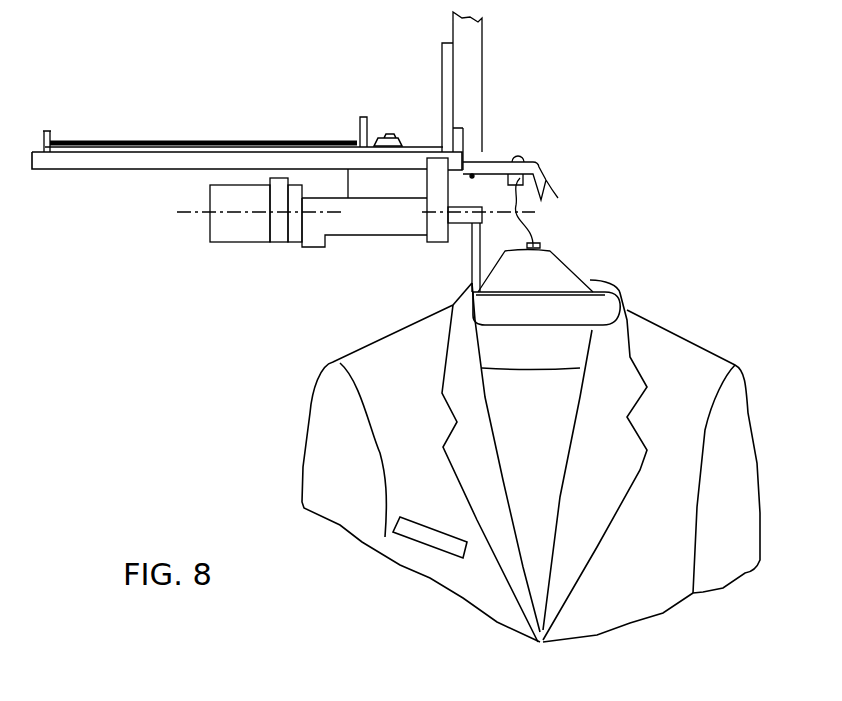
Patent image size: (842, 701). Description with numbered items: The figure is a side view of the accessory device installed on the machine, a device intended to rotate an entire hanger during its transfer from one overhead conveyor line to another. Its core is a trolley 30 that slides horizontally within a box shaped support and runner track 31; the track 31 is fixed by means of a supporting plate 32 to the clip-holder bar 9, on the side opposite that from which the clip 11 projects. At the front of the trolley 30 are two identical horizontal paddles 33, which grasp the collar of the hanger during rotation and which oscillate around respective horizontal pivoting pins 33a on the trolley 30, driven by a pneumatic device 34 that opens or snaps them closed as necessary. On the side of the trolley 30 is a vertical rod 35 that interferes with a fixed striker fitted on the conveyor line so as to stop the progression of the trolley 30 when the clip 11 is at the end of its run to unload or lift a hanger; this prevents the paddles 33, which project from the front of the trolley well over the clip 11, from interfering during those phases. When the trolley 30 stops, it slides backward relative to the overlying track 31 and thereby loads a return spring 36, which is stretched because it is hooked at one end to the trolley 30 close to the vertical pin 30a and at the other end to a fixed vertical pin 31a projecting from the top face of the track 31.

The clip-holder bar 9 is at (470, 70).
The clip 11 is at (493, 167).
The trolley 30 is at (367, 192).
The vertical pin 30a is at (362, 125).
The box shaped support and runner track 31 is at (160, 160).
The fixed vertical pin 31a is at (47, 130).
The supporting plate 32 is at (440, 52).
The horizontal paddles 33 is at (565, 308).
The horizontal pivoting pins 33a is at (467, 218).
The pneumatic device 34 is at (240, 232).
The vertical rod 35 is at (438, 170).
The return spring 36 is at (135, 140).